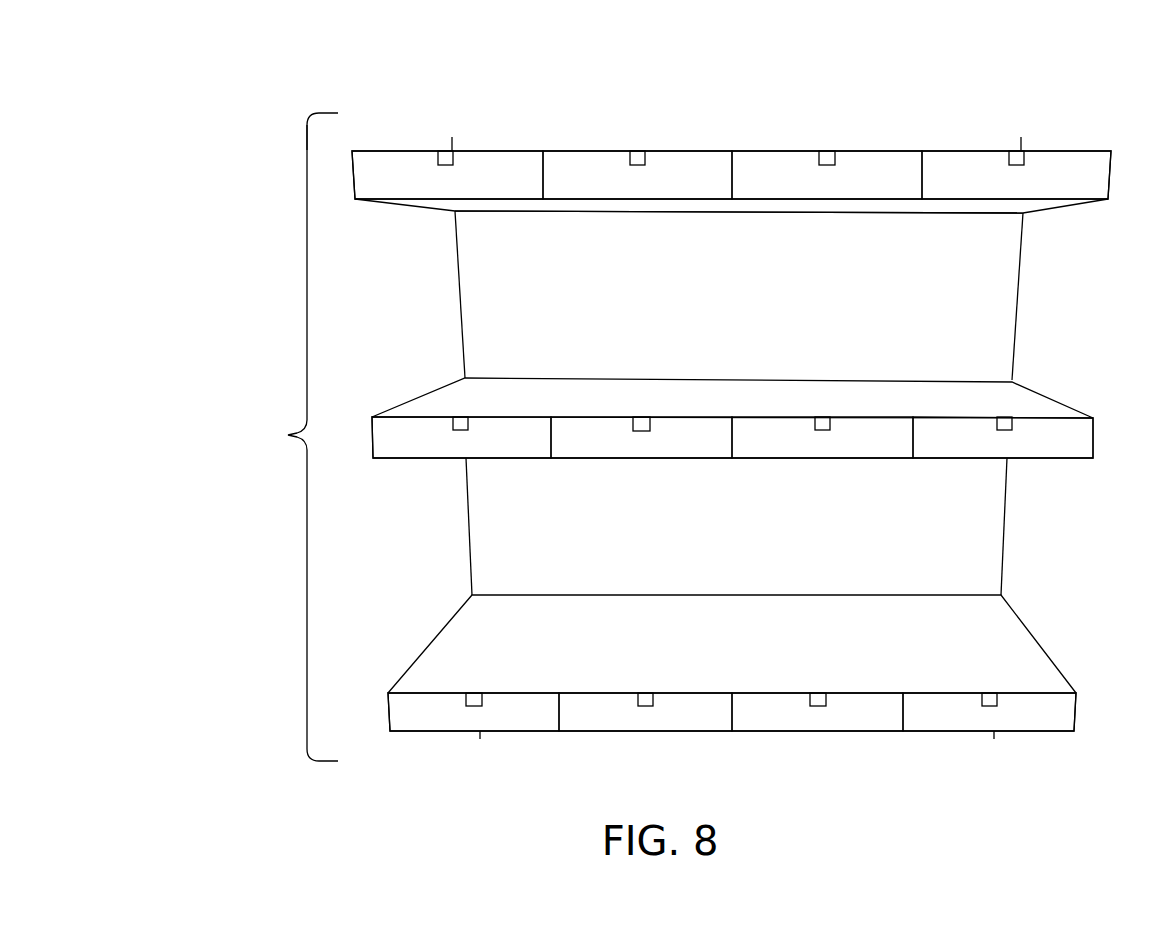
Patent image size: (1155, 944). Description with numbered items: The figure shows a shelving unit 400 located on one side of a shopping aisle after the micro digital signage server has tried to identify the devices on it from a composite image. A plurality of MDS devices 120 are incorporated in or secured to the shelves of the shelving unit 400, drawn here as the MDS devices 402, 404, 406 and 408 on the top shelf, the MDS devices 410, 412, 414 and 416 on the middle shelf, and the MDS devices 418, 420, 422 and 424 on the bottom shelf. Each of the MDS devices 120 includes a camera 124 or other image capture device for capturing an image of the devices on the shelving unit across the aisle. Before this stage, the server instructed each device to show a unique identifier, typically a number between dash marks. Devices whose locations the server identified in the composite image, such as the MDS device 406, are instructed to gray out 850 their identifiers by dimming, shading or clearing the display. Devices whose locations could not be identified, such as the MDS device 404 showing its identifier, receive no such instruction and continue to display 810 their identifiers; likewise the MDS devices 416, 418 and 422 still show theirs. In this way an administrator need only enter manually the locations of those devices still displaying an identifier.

The shelving unit 400 is at (262, 100).
The MDS devices 120 is at (291, 437).
The MDS device 402 is at (414, 150).
The MDS device 404 is at (610, 150).
The MDS device 406 is at (793, 150).
The MDS device 408 is at (944, 150).
The camera 124 is at (1012, 150).
The display of unique identifier 810 is at (610, 201).
The gray out of unique identifier 850 is at (793, 201).
The MDS device 410 is at (416, 459).
The MDS device 412 is at (595, 459).
The MDS device 414 is at (775, 459).
The MDS device 416 is at (955, 459).
The MDS device 418 is at (415, 732).
The MDS device 420 is at (595, 732).
The MDS device 422 is at (775, 732).
The MDS device 424 is at (955, 732).